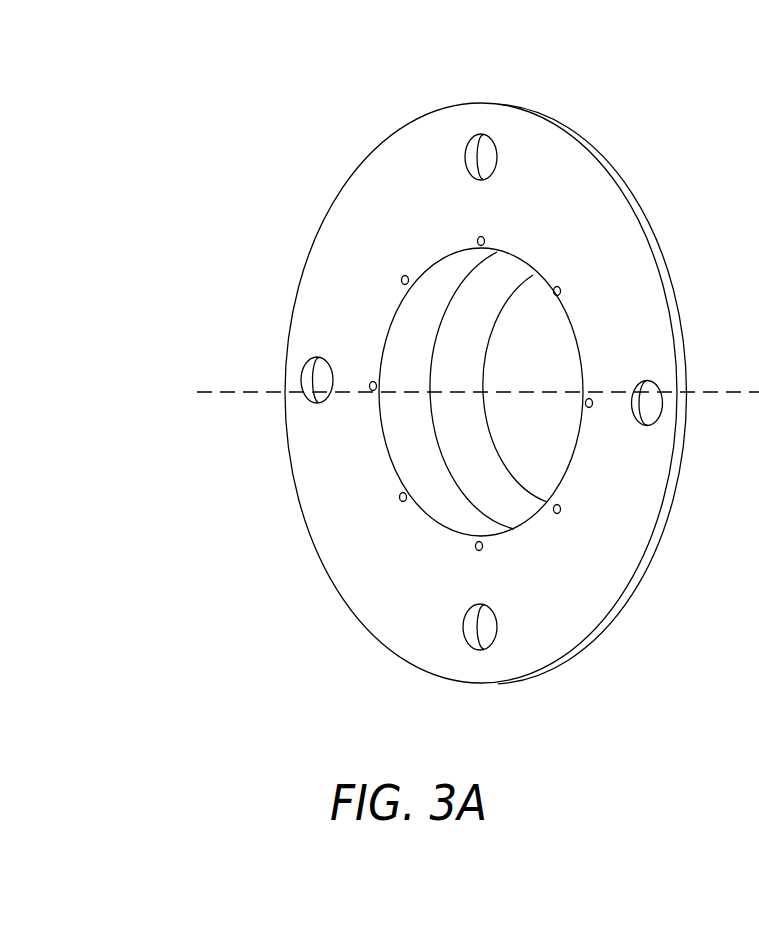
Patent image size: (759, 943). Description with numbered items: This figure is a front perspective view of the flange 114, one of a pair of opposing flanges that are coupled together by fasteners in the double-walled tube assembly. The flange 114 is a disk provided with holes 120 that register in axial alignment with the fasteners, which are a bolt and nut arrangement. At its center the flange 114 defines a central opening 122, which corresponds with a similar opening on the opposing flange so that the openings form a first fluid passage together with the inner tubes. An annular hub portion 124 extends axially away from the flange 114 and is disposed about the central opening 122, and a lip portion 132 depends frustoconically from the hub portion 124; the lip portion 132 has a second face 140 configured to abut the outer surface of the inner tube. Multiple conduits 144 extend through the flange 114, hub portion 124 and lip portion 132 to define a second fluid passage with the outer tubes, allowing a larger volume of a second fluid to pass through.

The flange 114 is at (580, 126).
The holes 120 is at (657, 405).
The central opening 122 is at (553, 383).
The annular hub portion 124 is at (413, 322).
The lip portion 132 is at (499, 327).
The second face 140 is at (450, 363).
The conduits 144 is at (400, 280).